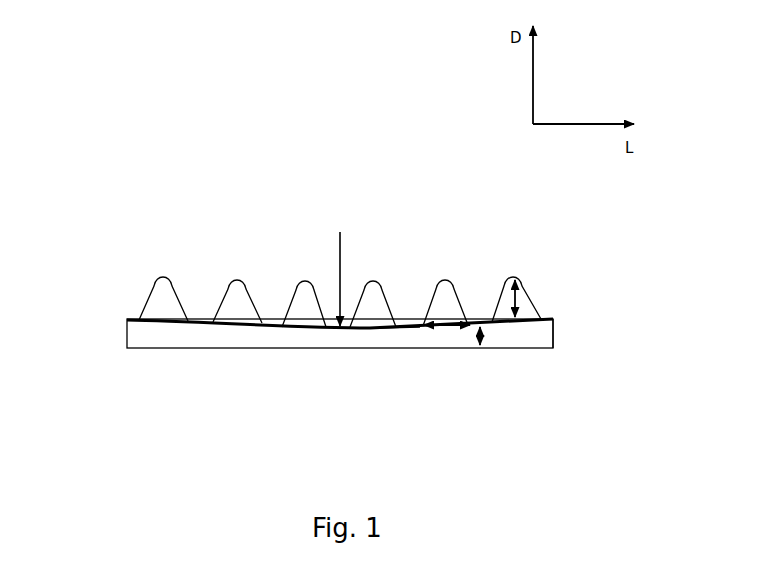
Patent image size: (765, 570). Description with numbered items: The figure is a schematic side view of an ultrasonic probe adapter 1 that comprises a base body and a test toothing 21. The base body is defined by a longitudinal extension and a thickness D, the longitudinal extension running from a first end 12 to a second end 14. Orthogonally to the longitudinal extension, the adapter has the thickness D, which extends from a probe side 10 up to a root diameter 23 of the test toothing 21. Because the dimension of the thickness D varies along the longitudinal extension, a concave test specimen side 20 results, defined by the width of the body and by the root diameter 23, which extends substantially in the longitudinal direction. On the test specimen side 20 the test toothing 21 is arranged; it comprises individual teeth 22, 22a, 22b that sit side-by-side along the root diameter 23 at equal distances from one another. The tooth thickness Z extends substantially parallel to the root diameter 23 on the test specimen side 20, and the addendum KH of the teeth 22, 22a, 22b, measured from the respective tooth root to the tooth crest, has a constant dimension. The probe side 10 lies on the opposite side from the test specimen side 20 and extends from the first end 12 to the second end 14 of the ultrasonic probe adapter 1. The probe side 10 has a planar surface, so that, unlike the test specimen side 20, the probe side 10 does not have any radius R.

The ultrasonic probe adapter 1 is at (154, 184).
The probe side 10 is at (217, 353).
The first end 12 is at (126, 333).
The second end 14 is at (553, 343).
The test specimen side 20 is at (407, 328).
The test toothing 21 is at (332, 297).
The teeth 22 is at (443, 298).
The tooth 22a is at (168, 288).
The tooth 22b is at (522, 288).
The root diameter 23 is at (165, 322).
The addendum KH is at (518, 301).
The tooth thickness Z is at (447, 316).
The thickness D is at (489, 337).
The radius R is at (338, 267).